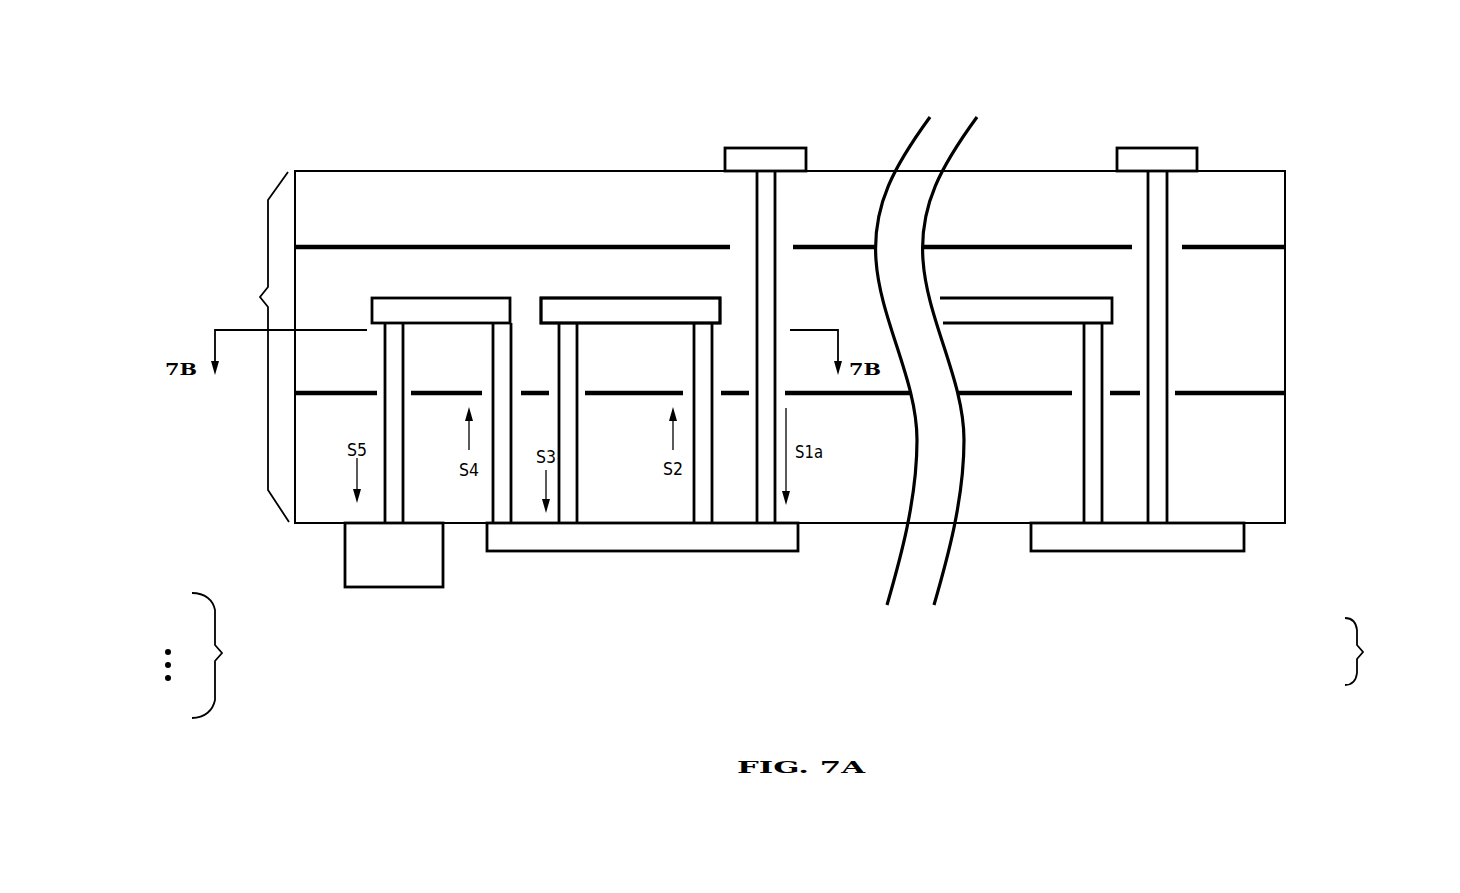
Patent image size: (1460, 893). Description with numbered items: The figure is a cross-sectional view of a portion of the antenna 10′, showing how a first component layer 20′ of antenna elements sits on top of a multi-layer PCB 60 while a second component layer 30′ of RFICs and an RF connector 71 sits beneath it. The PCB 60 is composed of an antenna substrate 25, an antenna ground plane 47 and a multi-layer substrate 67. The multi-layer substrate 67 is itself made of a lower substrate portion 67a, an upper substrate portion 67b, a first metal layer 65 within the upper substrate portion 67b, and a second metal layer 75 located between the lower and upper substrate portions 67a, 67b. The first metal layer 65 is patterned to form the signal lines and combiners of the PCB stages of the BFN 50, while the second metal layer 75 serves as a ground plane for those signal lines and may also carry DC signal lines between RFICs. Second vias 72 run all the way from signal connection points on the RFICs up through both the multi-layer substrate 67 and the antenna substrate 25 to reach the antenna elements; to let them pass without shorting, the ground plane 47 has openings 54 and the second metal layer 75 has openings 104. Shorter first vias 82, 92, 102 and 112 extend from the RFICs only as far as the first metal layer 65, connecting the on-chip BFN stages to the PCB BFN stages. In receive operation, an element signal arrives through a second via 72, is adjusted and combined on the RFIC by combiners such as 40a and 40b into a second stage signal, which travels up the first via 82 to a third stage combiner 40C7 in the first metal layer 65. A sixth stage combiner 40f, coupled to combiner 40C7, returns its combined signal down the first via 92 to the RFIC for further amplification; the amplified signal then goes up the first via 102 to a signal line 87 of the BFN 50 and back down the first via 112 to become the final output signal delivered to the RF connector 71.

The antenna 10′ is at (1237, 63).
The first component layer 20′ is at (1364, 158).
The second component layer 30′ is at (1312, 538).
The second via 72 is at (775, 206).
The antenna substrate 25 is at (1219, 210).
The antenna ground plane 47 is at (1268, 244).
The opening 54 is at (1133, 255).
The first metal layer 65 is at (1312, 308).
The upper substrate portion 67b is at (1275, 504).
The second metal layer 75 is at (1310, 393).
The lower substrate portion 67a is at (1275, 543).
The multi-layer substrate 67 is at (1366, 651).
The signal line 87 is at (397, 308).
The sixth stage combiner 40f is at (562, 308).
The third stage combiner 40C7 is at (690, 308).
The first via 112 is at (384, 348).
The first via 102 is at (492, 348).
The first via 92 is at (578, 345).
The first via 82 is at (693, 346).
The opening 104 is at (1143, 403).
The RF connector 71 is at (415, 580).
The PCB 60 is at (682, 347).
The BFN 50 is at (206, 655).
The combiner 40a is at (170, 606).
The combiner 40b is at (170, 629).